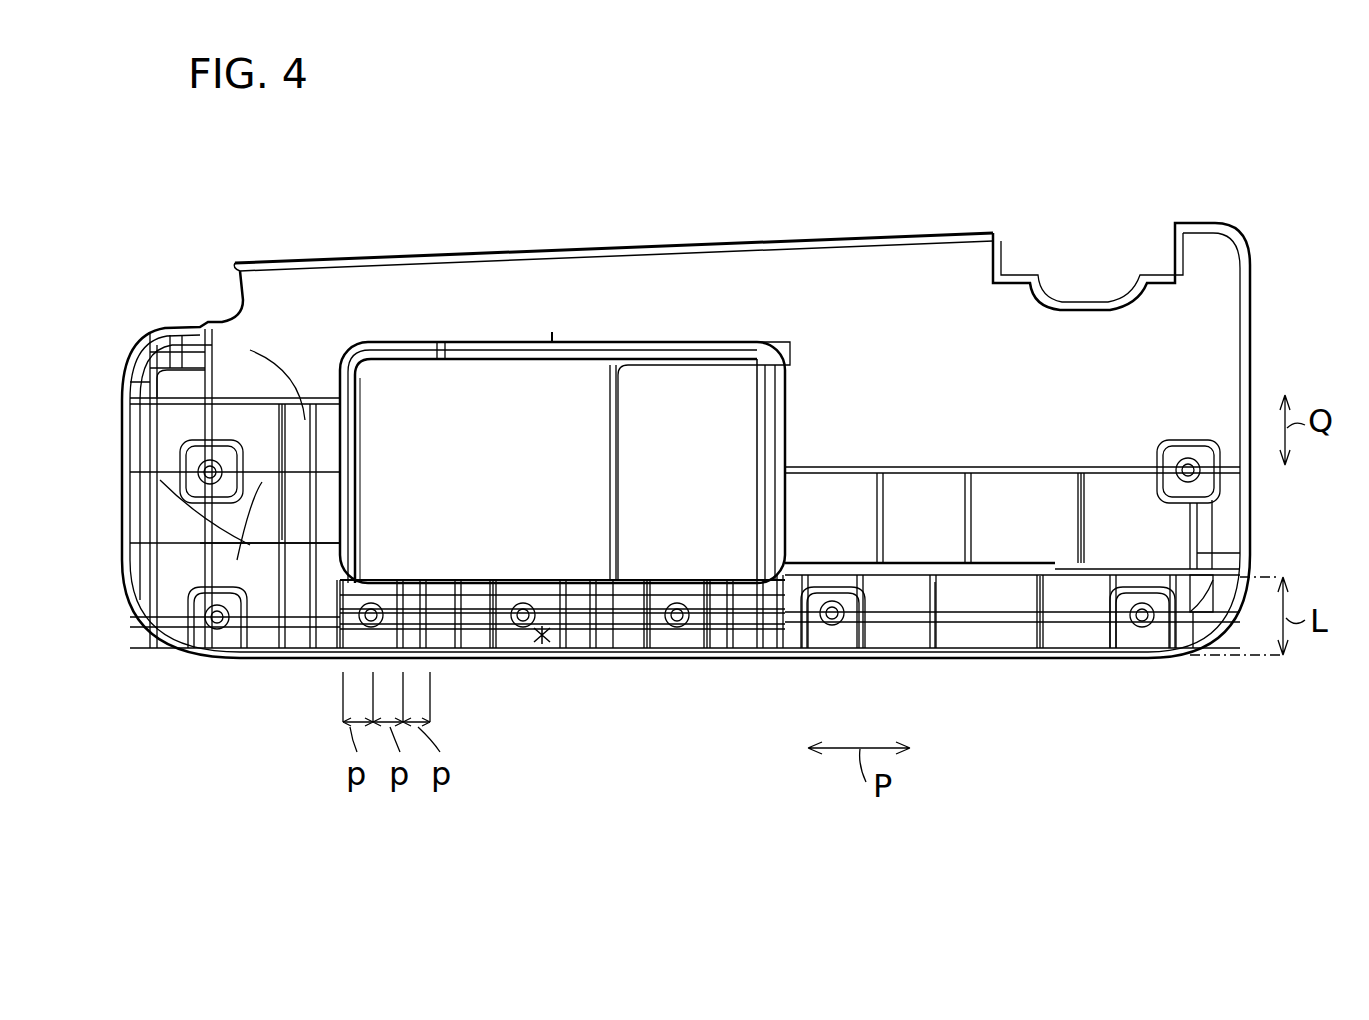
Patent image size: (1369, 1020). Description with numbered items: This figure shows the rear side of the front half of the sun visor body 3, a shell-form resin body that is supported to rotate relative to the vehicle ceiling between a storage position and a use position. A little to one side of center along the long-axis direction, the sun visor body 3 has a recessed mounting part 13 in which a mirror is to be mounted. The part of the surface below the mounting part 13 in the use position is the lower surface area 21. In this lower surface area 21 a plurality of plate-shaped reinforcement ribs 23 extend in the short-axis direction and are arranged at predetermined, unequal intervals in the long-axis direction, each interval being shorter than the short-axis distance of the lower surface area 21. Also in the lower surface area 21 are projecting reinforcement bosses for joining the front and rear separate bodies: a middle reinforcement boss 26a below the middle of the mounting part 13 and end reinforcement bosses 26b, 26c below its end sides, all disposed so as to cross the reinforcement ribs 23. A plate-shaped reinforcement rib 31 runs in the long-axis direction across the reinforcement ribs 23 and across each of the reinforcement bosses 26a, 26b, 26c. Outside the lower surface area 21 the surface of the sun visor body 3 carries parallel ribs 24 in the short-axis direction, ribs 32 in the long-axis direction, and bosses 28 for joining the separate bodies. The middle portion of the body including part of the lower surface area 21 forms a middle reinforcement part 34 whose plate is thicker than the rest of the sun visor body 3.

The sun visor body 3 is at (905, 207).
The mounting part 13 is at (517, 407).
The lower surface area 21 is at (548, 642).
The reinforcement ribs 23 is at (427, 575).
The ribs 24 is at (283, 430).
The middle reinforcement boss 26a is at (510, 630).
The end reinforcement boss 26b is at (345, 628).
The end reinforcement boss 26c is at (705, 632).
The bosses 28 is at (205, 478).
The reinforcement rib 31 is at (613, 625).
The ribs 32 is at (250, 545).
The middle reinforcement part 34 is at (662, 635).